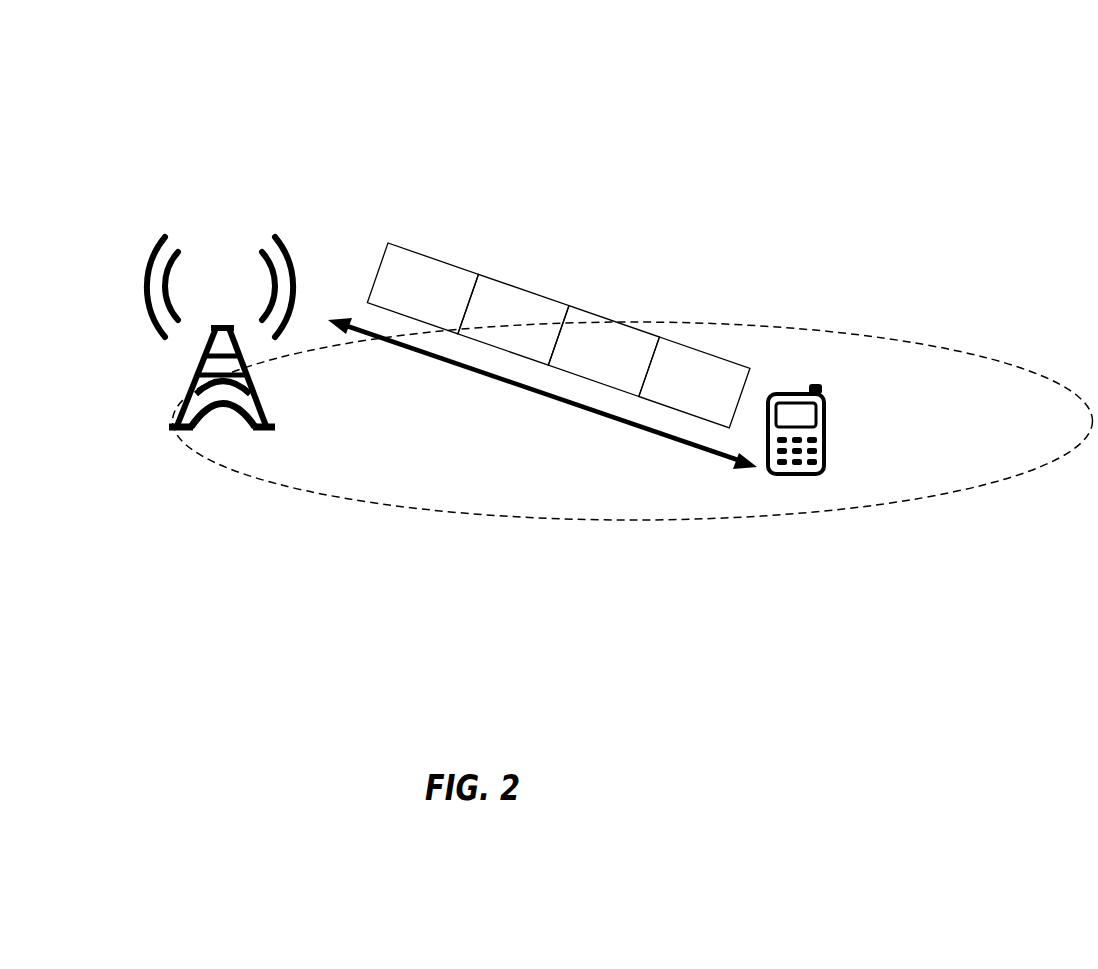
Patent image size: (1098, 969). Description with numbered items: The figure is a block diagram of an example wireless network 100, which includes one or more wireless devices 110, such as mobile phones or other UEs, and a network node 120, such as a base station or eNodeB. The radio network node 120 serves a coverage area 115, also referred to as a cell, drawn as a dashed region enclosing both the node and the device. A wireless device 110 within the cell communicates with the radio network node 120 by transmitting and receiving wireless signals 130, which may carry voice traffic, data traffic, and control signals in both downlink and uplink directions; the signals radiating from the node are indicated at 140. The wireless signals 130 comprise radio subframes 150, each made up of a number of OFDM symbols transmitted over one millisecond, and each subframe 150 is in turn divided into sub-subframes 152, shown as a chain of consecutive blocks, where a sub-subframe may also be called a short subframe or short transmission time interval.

The wireless network 100 is at (268, 37).
The wireless device 110 is at (794, 466).
The coverage area 115 is at (542, 399).
The network node 120 is at (250, 430).
The wireless signals 130 is at (717, 458).
The transmitted signal 140 is at (220, 287).
The radio subframe 150 is at (558, 285).
The sub-subframe 152 is at (629, 322).